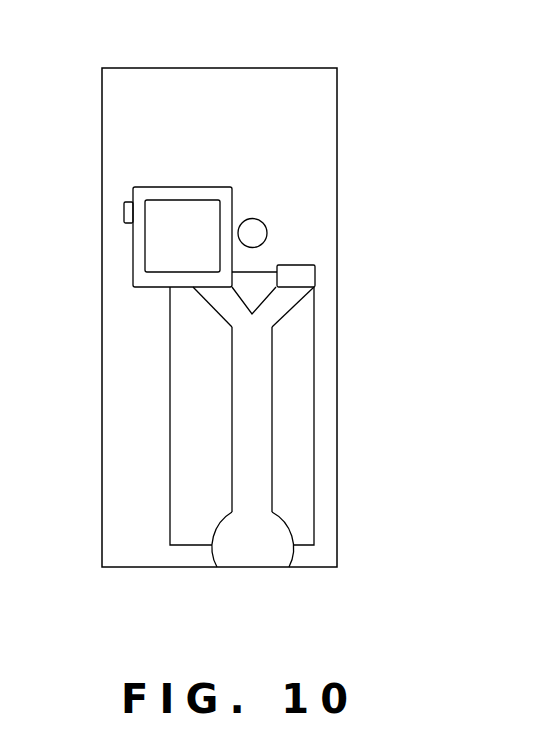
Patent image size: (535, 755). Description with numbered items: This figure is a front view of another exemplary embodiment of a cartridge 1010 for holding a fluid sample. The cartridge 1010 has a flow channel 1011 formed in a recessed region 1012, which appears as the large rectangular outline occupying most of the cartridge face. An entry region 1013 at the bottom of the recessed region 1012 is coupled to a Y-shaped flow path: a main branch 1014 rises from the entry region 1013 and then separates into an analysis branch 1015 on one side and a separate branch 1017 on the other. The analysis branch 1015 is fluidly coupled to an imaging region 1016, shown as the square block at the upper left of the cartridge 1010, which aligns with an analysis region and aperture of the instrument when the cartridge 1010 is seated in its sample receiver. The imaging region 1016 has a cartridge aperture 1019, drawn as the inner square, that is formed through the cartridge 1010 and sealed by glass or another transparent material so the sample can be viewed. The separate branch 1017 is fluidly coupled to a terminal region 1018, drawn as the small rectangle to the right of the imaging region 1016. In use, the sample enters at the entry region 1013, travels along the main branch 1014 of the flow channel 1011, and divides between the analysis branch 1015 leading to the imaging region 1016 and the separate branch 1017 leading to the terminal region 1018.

The cartridge 1010 is at (362, 86).
The flow channel 1011 is at (214, 419).
The recessed region 1012 is at (192, 483).
The entry region 1013 is at (245, 552).
The main branch 1014 is at (267, 460).
The analysis branch 1015 is at (215, 303).
The imaging region 1016 is at (128, 244).
The separate branch 1017 is at (288, 305).
The terminal region 1018 is at (303, 272).
The cartridge aperture 1019 is at (175, 200).